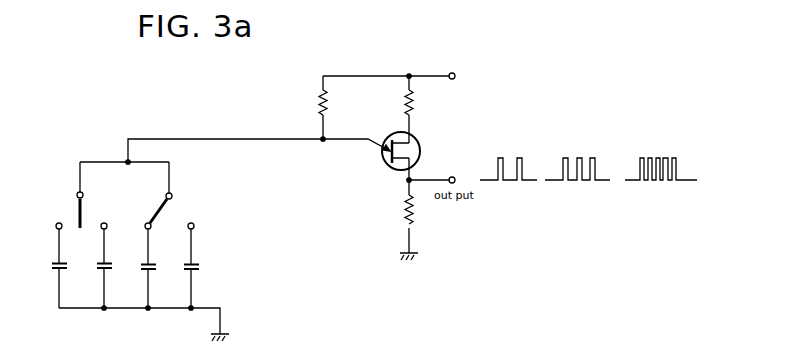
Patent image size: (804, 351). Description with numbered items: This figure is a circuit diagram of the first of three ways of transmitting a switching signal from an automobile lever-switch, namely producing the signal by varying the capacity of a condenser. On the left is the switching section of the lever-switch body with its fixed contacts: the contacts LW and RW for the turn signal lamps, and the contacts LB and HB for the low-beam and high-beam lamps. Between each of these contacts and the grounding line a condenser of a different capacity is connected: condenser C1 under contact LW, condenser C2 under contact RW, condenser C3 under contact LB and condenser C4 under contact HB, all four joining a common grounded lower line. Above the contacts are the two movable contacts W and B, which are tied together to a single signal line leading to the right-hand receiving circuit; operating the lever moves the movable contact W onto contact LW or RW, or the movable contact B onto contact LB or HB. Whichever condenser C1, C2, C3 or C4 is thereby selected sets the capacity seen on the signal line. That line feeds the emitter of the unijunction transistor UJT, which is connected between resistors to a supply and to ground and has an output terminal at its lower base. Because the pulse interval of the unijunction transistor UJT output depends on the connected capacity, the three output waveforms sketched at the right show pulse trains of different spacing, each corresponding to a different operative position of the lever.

The movable contact W is at (75, 207).
The contact for turn signal lamp LW is at (56, 227).
The contact for turn signal lamp RW is at (105, 222).
The movable contact B is at (160, 208).
The contact for low-beam lamp LB is at (168, 214).
The contact for high-beam lamp HB is at (196, 227).
The condenser C1 is at (51, 265).
The condenser C2 is at (95, 268).
The condenser C3 is at (146, 271).
The condenser C4 is at (201, 268).
The unijunction transistor UJT is at (386, 163).